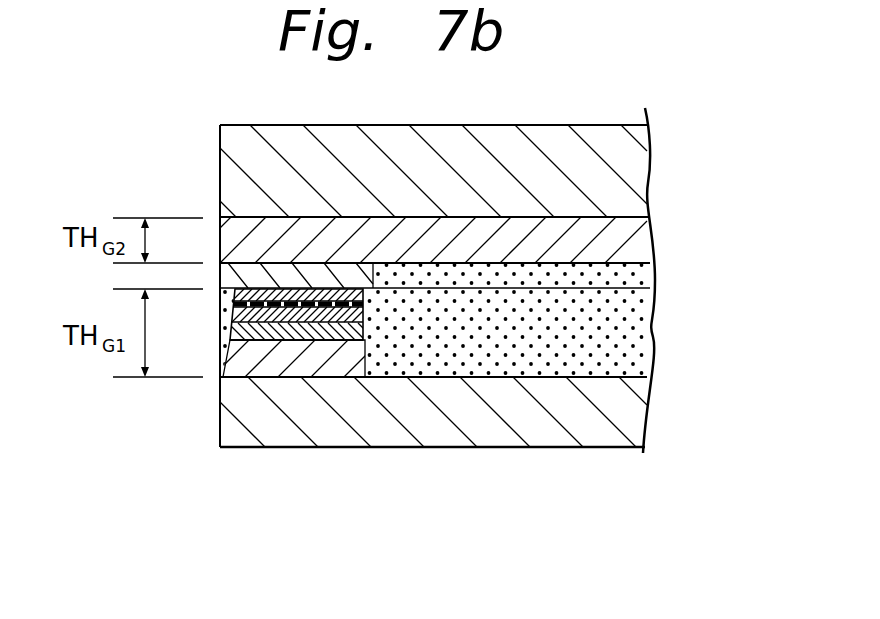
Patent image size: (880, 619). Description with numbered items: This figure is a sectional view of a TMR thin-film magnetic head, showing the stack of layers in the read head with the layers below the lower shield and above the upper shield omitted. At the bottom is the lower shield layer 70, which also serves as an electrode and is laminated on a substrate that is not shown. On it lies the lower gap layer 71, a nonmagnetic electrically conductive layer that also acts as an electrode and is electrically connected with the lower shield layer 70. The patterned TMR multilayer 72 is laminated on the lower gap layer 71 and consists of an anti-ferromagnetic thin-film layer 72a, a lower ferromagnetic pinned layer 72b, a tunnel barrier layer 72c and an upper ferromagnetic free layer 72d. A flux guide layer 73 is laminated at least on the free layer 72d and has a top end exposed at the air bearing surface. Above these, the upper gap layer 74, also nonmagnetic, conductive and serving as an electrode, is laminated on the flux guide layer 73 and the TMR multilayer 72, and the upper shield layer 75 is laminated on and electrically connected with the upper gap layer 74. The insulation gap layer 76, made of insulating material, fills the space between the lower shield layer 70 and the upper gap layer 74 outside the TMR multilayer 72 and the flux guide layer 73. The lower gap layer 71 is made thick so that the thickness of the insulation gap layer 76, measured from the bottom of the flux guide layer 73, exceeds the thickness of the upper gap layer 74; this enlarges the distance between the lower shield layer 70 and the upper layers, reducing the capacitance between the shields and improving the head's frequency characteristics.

The lower shield layer 70 is at (637, 437).
The lower gap layer 71 is at (221, 370).
The TMR multilayer 72 is at (438, 433).
The anti-ferromagnetic thin-film layer 72a is at (322, 416).
The lower ferromagnetic thin-film layer (pinned layer) 72b is at (363, 320).
The tunnel barrier layer 72c is at (363, 307).
The upper ferromagnetic thin-film layer (free layer) 72d is at (363, 294).
The flux guide layer 73 is at (650, 294).
The upper gap layer 74 is at (643, 253).
The upper shield layer 75 is at (643, 153).
The insulation gap layer 76 is at (648, 353).